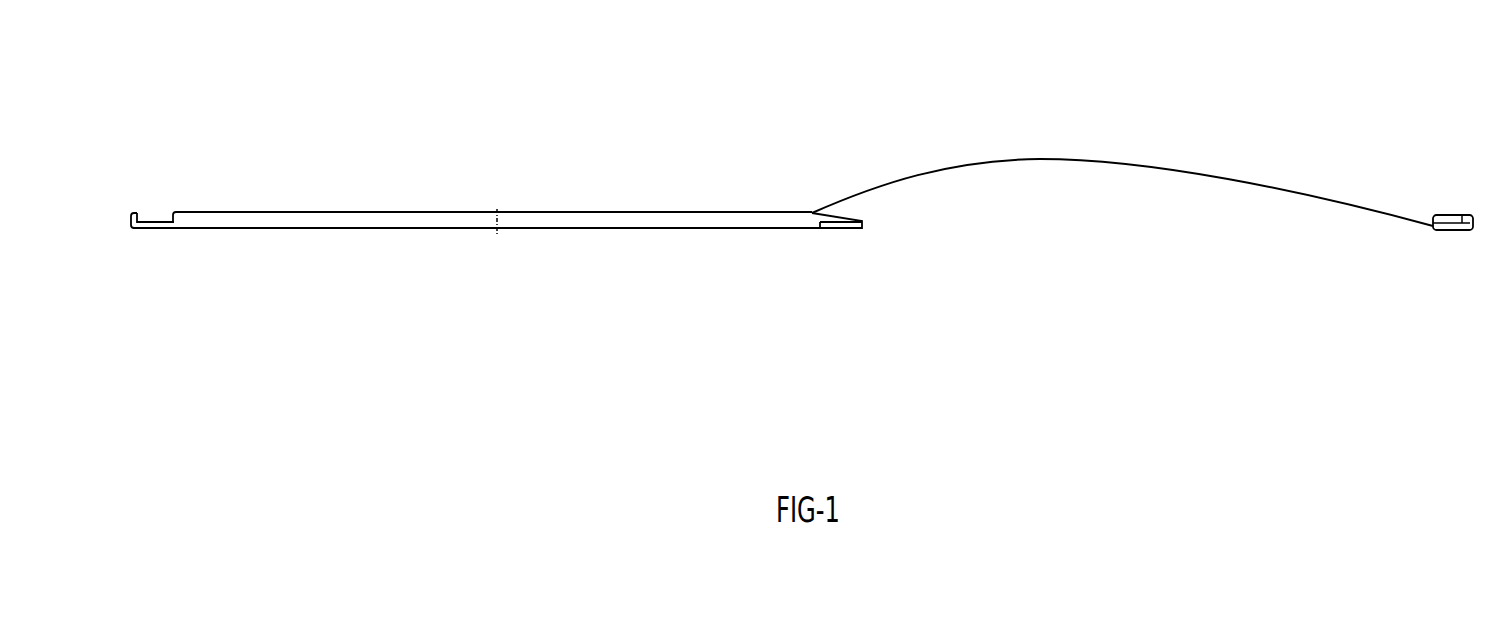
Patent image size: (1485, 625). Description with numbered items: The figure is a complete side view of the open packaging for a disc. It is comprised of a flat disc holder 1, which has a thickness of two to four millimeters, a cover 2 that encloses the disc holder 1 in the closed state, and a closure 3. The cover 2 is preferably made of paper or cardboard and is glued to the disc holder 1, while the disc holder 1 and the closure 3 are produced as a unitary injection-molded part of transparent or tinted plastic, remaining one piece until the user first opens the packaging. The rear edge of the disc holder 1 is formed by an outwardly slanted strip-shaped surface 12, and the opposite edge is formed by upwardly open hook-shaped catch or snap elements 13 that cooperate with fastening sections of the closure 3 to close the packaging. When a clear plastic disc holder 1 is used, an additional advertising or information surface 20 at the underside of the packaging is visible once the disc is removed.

The disc holder 1 is at (445, 221).
The cover 2 is at (1041, 158).
The closure 3 is at (1445, 215).
The strip-shaped surface 12 is at (864, 221).
The hook-shaped catch or snap elements 13 is at (155, 230).
The advertising or information surface 20 is at (622, 223).